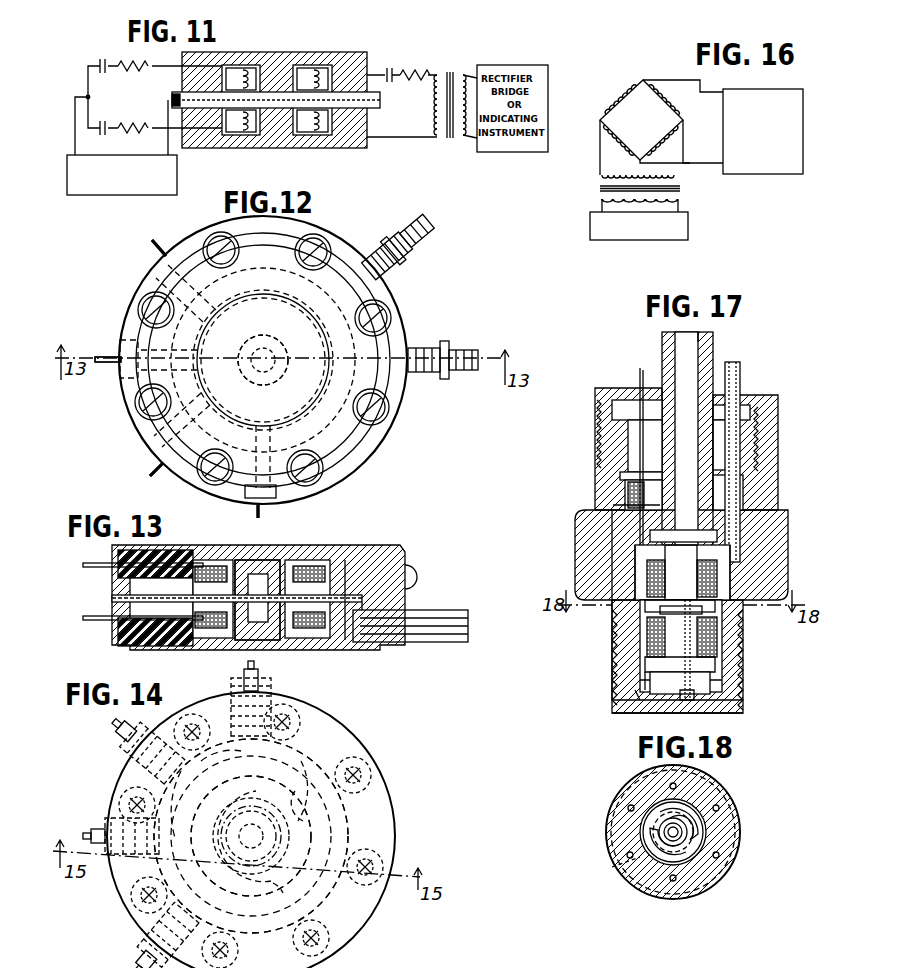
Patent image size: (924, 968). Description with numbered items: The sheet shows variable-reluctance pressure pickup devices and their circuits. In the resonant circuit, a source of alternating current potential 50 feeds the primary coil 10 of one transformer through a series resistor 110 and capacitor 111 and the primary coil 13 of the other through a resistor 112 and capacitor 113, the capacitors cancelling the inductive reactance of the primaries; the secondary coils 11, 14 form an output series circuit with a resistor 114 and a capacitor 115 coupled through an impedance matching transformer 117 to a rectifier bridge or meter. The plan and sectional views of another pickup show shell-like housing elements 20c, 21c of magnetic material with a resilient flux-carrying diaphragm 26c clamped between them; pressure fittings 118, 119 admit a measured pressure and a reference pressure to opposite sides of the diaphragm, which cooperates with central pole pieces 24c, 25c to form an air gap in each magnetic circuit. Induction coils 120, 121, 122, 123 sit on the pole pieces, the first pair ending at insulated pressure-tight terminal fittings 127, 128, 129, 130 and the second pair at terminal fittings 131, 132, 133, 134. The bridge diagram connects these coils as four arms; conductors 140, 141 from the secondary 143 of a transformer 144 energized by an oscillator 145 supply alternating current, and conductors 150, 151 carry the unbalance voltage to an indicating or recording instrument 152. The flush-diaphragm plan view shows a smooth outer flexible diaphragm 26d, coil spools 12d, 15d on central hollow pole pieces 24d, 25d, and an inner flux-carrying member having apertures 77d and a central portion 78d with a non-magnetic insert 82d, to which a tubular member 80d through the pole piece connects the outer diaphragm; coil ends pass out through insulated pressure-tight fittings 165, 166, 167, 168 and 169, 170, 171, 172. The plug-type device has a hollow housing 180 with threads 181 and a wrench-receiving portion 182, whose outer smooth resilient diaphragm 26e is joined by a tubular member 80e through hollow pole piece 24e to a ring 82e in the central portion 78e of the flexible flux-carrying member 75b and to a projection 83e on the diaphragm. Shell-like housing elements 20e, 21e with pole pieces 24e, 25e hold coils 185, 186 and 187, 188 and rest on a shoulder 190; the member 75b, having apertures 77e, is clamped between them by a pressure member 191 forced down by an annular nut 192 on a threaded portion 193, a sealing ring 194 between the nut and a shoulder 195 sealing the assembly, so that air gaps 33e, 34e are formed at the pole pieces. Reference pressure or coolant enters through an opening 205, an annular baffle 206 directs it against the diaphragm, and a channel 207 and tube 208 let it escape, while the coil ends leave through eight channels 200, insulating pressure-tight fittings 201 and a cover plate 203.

In FIG. 11, the primary coil 10 is at (257, 65).
In FIG. 11, the secondary coil 11 is at (316, 65).
In FIG. 11, the primary coil 13 is at (239, 134).
In FIG. 11, the secondary coil 14 is at (301, 134).
In FIG. 11, the source of alternating current potential 50 is at (177, 163).
In FIG. 11, the resistor 110 is at (128, 76).
In FIG. 11, the capacitor 111 is at (98, 62).
In FIG. 11, the resistor 112 is at (154, 123).
In FIG. 11, the capacitor 113 is at (118, 123).
In FIG. 11, the resistor 114 is at (414, 72).
In FIG. 11, the capacitor 115 is at (386, 66).
In FIG. 11, the impedance matching transformer 117 is at (446, 146).
In FIG. 12, the pressure fitting 118 is at (412, 234).
In FIG. 13, the pressure fitting 118 is at (416, 570).
In FIG. 12, the pressure fitting 119 is at (464, 332).
In FIG. 13, the pressure fitting 119 is at (438, 610).
In FIG. 16, the induction coil 120 is at (626, 94).
In FIG. 13, the induction coil 120 is at (210, 566).
In FIG. 16, the induction coil 121 is at (665, 122).
In FIG. 13, the induction coil 121 is at (222, 562).
In FIG. 16, the induction coil 122 is at (615, 124).
In FIG. 13, the induction coil 122 is at (204, 632).
In FIG. 16, the induction coil 123 is at (672, 100).
In FIG. 13, the induction coil 123 is at (227, 634).
In FIG. 12, the terminal fitting 127 is at (150, 240).
In FIG. 12, the terminal fitting 128 is at (110, 348).
In FIG. 13, the terminal fitting 128 is at (86, 563).
In FIG. 12, the terminal fitting 129 is at (146, 470).
In FIG. 12, the terminal fitting 130 is at (260, 512).
In FIG. 12, the terminal fitting 131 is at (116, 259).
In FIG. 12, the terminal fitting 132 is at (92, 340).
In FIG. 13, the terminal fitting 132 is at (88, 613).
In FIG. 12, the terminal fitting 133 is at (114, 464).
In FIG. 12, the terminal fitting 134 is at (315, 513).
In FIG. 16, the conductor 140 is at (600, 150).
In FIG. 16, the conductor 141 is at (684, 139).
In FIG. 16, the transformer secondary 143 is at (602, 175).
In FIG. 16, the transformer 144 is at (608, 183).
In FIG. 16, the oscillator 145 is at (688, 228).
In FIG. 16, the output conductor 150 is at (668, 78).
In FIG. 16, the output conductor 151 is at (695, 170).
In FIG. 16, the indicating or recording instrument 152 is at (758, 175).
In FIG. 14, the insulated pressure-tight fitting 165 is at (262, 684).
In FIG. 14, the insulated pressure-tight fitting 166 is at (122, 736).
In FIG. 14, the insulated pressure-tight fitting 167 is at (94, 838).
In FIG. 14, the insulated pressure-tight fitting 168 is at (148, 946).
In FIG. 14, the insulated pressure-tight fitting 169 is at (351, 687).
In FIG. 14, the insulated pressure-tight fitting 170 is at (76, 759).
In FIG. 14, the insulated pressure-tight fitting 171 is at (66, 827).
In FIG. 14, the insulated pressure-tight fitting 172 is at (108, 947).
In FIG. 12, the shell-like housing element 20c is at (394, 299).
In FIG. 13, the shell-like housing element 20c is at (402, 548).
In FIG. 13, the shell-like housing element 21c is at (400, 645).
In FIG. 12, the central pole piece 24c is at (260, 328).
In FIG. 13, the central pole piece 24c is at (276, 550).
In FIG. 12, the central pole piece 25c is at (271, 353).
In FIG. 13, the central pole piece 25c is at (276, 646).
In FIG. 13, the flux-carrying diaphragm 26c is at (342, 644).
In FIG. 14, the coil spool 12d is at (330, 836).
In FIG. 14, the coil spool 15d is at (339, 836).
In FIG. 14, the hollow pole piece 24d is at (338, 730).
In FIG. 14, the hollow pole piece 25d is at (282, 830).
In FIG. 14, the outer flexible diaphragm 26d is at (391, 809).
In FIG. 14, the apertures 77d is at (268, 888).
In FIG. 14, the central portion 78d is at (290, 876).
In FIG. 14, the tubular member 80d is at (278, 820).
In FIG. 14, the insert 82d is at (225, 804).
In FIG. 17, the hollow housing 180 is at (595, 453).
In FIG. 18, the hollow housing 180 is at (740, 800).
In FIG. 17, the threads 181 is at (646, 637).
In FIG. 18, the threads 181 is at (612, 867).
In FIG. 17, the wrench-receiving portion 182 is at (790, 496).
In FIG. 17, the coil 185 is at (646, 665).
In FIG. 17, the coil 186 is at (644, 684).
In FIG. 17, the coil 187 is at (644, 566).
In FIG. 17, the coil 188 is at (646, 582).
In FIG. 17, the shoulder 190 is at (644, 703).
In FIG. 17, the pressure member 191 is at (662, 341).
In FIG. 17, the annular nut 192 is at (600, 434).
In FIG. 17, the threaded portion 193 is at (602, 411).
In FIG. 17, the sealing ring 194 is at (614, 481).
In FIG. 17, the shoulder 195 is at (616, 503).
In FIG. 17, the channels 200 is at (614, 537).
In FIG. 18, the channels 200 is at (628, 826).
In FIG. 17, the insulating pressure-tight fittings 201 is at (618, 511).
In FIG. 17, the cover plate 203 is at (628, 394).
In FIG. 17, the opening 205 is at (706, 338).
In FIG. 17, the annular baffle 206 is at (716, 705).
In FIG. 17, the channel 207 is at (710, 685).
In FIG. 18, the channel 207 is at (722, 828).
In FIG. 17, the tube 208 is at (740, 374).
In FIG. 17, the shell-like housing element 20e is at (714, 661).
In FIG. 17, the shell-like housing element 21e is at (756, 535).
In FIG. 17, the hollow pole piece 24e is at (716, 641).
In FIG. 17, the hollow pole piece 25e is at (736, 559).
In FIG. 17, the outer resilient diaphragm 26e is at (645, 708).
In FIG. 17, the air gap 33e is at (700, 617).
In FIG. 17, the air gap 34e is at (732, 571).
In FIG. 17, the flexible flux-carrying member 75b is at (648, 611).
In FIG. 18, the flexible flux-carrying member 75b is at (710, 842).
In FIG. 18, the apertures 77e is at (695, 848).
In FIG. 18, the central portion 78e is at (676, 848).
In FIG. 17, the tubular member 80e is at (692, 702).
In FIG. 18, the tubular member 80e is at (668, 834).
In FIG. 17, the ring 82e is at (726, 595).
In FIG. 18, the ring 82e is at (650, 852).
In FIG. 17, the projection 83e is at (686, 700).